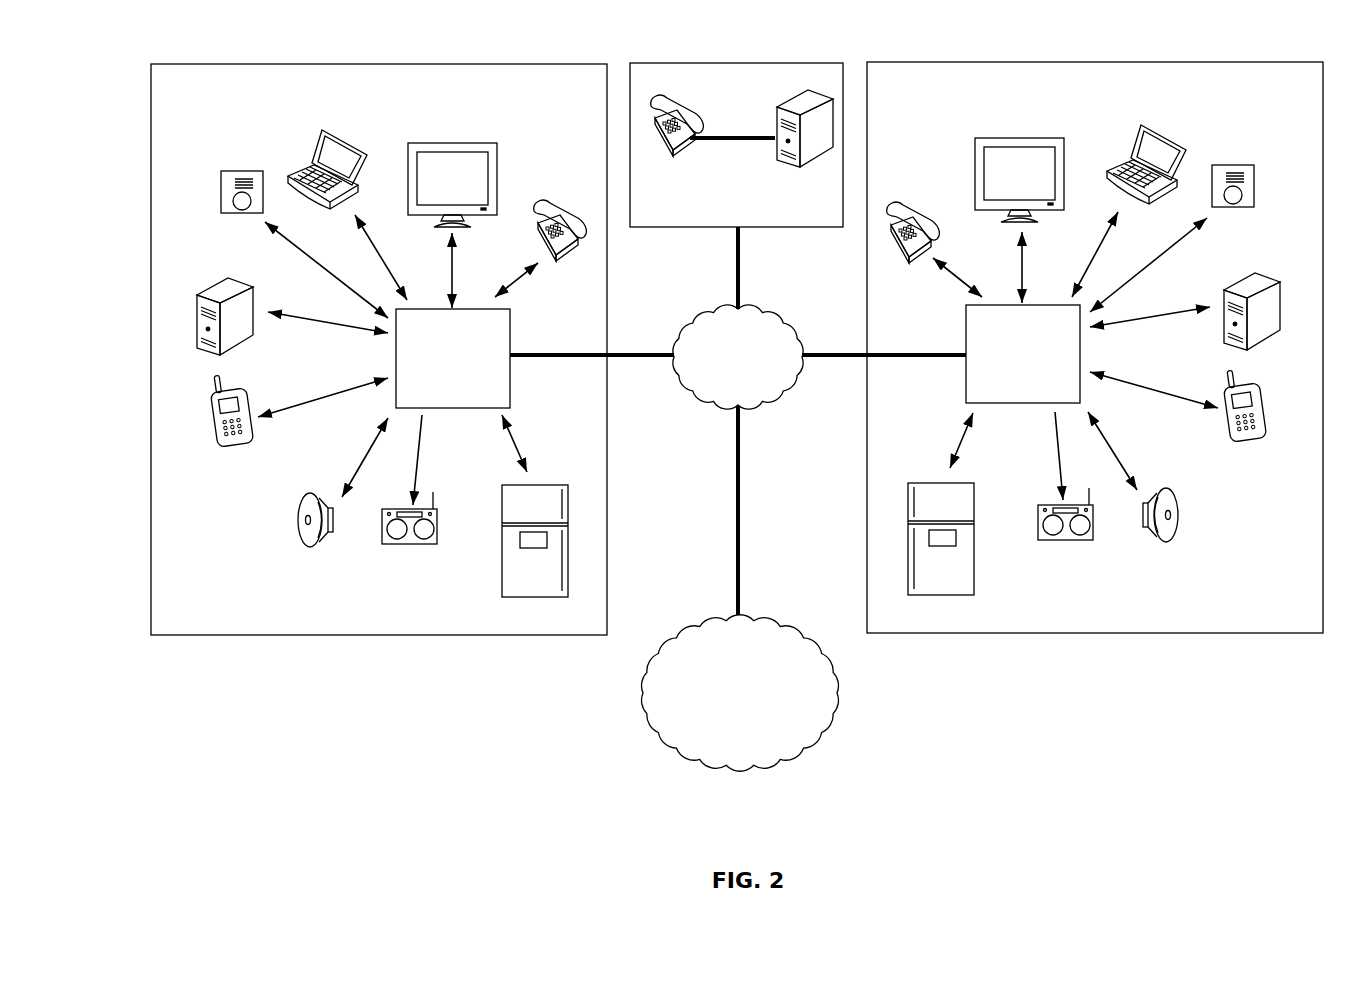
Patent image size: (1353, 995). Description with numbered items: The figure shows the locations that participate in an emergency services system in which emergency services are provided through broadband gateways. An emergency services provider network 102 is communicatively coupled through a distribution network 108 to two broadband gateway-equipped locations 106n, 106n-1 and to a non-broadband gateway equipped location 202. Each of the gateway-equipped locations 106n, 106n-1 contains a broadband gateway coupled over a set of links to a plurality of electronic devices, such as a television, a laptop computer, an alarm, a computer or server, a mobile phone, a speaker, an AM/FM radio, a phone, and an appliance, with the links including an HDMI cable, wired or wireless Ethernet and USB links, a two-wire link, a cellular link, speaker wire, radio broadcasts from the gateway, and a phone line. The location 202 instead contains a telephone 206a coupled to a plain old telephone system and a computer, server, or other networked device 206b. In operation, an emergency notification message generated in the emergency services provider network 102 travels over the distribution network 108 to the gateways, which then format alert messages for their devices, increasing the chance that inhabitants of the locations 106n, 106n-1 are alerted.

The emergency services provider network 102 is at (740, 693).
The broadband gateway-equipped location 106n is at (218, 64).
The broadband gateway-equipped location 106n-1 is at (1262, 52).
The distribution network 108 is at (738, 357).
The non-broadband gateway equipped location 202 is at (690, 63).
The telephone 206a is at (700, 95).
The computer, server, or other networked device 206b is at (768, 128).